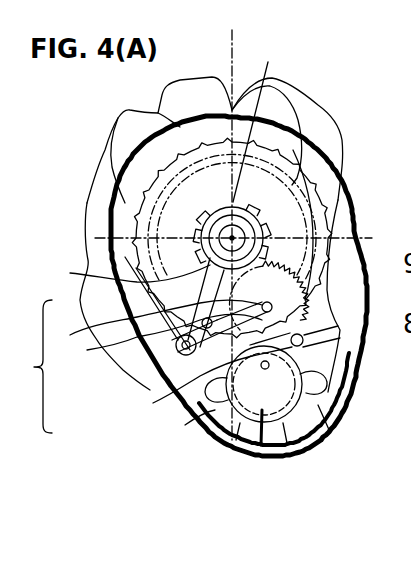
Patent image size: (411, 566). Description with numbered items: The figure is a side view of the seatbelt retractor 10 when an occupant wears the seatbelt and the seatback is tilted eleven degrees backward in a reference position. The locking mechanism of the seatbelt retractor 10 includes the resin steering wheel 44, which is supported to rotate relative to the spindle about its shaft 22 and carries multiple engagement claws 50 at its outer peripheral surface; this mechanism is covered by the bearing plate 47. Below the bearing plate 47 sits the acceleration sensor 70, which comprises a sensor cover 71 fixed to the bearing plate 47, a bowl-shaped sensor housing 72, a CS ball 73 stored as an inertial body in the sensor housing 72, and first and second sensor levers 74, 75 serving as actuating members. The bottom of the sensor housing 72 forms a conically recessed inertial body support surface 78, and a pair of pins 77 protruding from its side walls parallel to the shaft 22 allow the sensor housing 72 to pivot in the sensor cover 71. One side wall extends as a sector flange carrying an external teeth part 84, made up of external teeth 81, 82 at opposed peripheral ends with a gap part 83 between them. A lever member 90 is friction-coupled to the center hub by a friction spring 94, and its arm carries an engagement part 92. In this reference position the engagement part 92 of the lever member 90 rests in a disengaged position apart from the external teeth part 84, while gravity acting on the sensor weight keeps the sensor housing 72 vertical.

The seatbelt retractor 10 is at (318, 67).
The shaft 22 is at (262, 224).
The steering wheel 44 is at (300, 148).
The bearing plate 47 is at (302, 134).
The engagement claws 50 is at (350, 196).
The acceleration sensor 70 is at (229, 463).
The sensor cover 71 is at (327, 403).
The sensor housing 72 is at (256, 448).
The CS ball 73 is at (300, 453).
The first sensor lever 74 is at (187, 424).
The second sensor lever 75 is at (338, 332).
The pins 77 is at (320, 347).
The inertial body support surface 78 is at (306, 388).
The external teeth 81 is at (153, 403).
The external teeth 82 is at (122, 330).
The gap part 83 is at (122, 346).
The external teeth part 84 is at (27, 366).
The lever member 90 is at (115, 280).
The engagement part 92 is at (150, 372).
The friction spring 94 is at (256, 119).